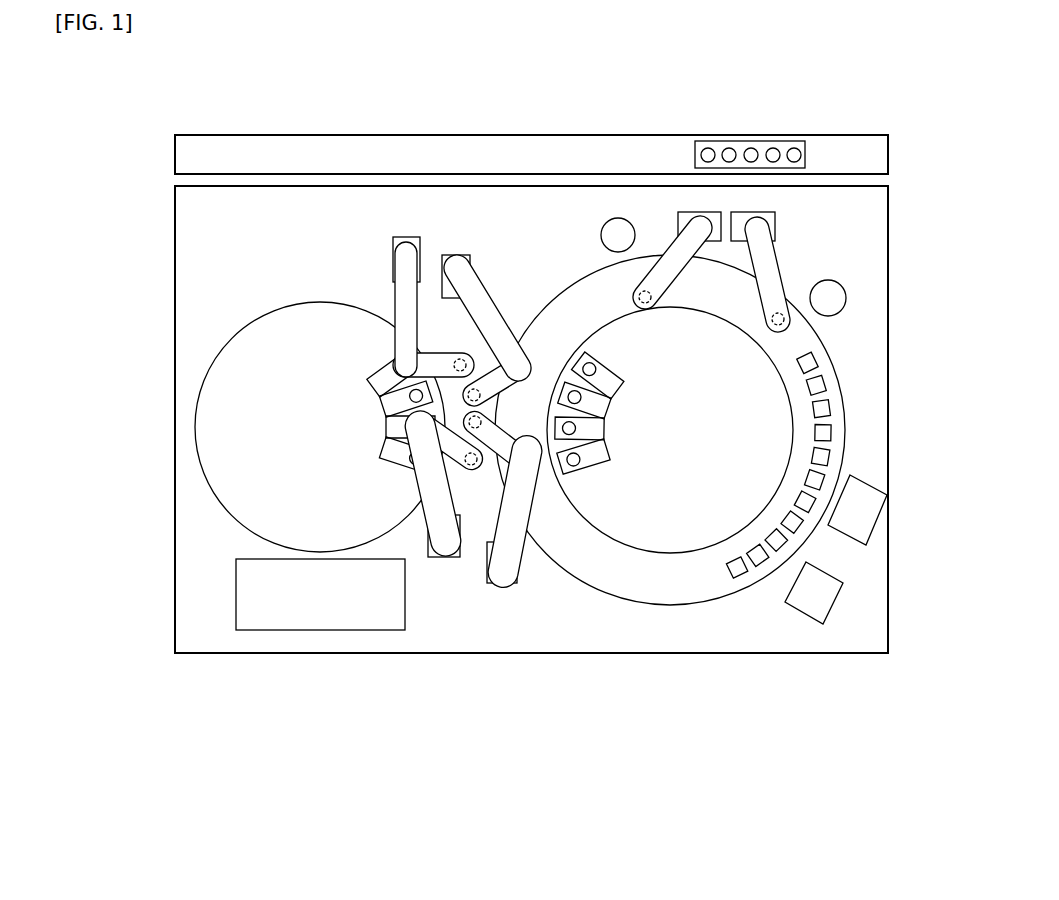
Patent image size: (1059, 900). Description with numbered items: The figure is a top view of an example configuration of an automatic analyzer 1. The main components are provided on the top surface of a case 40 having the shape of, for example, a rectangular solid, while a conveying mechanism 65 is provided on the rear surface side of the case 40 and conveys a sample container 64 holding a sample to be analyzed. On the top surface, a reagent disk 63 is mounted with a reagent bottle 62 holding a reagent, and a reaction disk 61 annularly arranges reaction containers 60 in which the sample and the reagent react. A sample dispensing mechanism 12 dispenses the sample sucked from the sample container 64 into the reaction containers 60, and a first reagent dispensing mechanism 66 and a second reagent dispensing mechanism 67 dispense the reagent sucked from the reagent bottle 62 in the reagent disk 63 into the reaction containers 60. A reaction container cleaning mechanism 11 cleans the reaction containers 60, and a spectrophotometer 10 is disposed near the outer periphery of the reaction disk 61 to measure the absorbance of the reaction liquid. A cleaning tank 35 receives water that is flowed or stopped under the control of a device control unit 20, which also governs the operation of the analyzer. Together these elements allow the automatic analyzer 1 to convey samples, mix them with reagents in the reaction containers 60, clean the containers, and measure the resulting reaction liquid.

The automatic analyzer 1 is at (518, 750).
The spectrophotometer 10 is at (818, 600).
The reaction container cleaning mechanism 11 is at (862, 510).
The sample dispensing mechanism 12 is at (670, 270).
The device control unit 20 is at (310, 602).
The cleaning tank 35 is at (618, 232).
The case 40 is at (176, 242).
The reaction containers 60 is at (842, 397).
The reaction disk 61 is at (842, 443).
The reagent bottle 62 is at (597, 412).
The reagent disk 63 is at (293, 320).
The sample container 64 is at (730, 157).
The conveying mechanism 65 is at (272, 134).
The first reagent dispensing mechanism 66 is at (412, 293).
The second reagent dispensing mechanism 67 is at (442, 533).